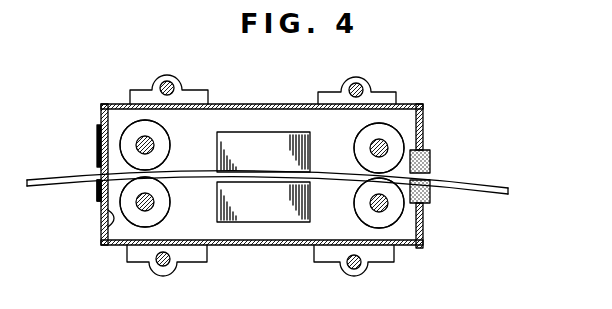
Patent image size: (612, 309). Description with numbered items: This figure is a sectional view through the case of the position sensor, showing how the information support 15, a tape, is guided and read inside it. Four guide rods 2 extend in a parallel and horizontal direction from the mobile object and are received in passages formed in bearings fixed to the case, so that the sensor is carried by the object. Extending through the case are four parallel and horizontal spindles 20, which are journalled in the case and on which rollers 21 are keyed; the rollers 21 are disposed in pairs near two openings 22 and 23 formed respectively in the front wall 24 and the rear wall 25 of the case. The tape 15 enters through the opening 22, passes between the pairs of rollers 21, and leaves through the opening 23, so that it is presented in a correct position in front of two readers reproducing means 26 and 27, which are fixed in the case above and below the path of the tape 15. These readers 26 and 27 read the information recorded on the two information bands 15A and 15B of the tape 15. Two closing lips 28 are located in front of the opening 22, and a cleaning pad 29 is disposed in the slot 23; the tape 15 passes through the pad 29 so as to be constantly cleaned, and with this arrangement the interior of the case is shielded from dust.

The guide rod 2 is at (172, 84).
The information support 15 is at (58, 169).
The information band 15A is at (197, 172).
The information band 15B is at (334, 181).
The spindle 20 is at (140, 144).
The roller 21 is at (131, 121).
The opening 22 is at (97, 187).
The opening 23 is at (428, 190).
The front wall 24 is at (104, 241).
The rear wall 25 is at (425, 214).
The reader reproducing means 26 is at (274, 129).
The reader reproducing means 27 is at (279, 225).
The closing lip 28 is at (96, 152).
The cleaning pad 29 is at (432, 170).